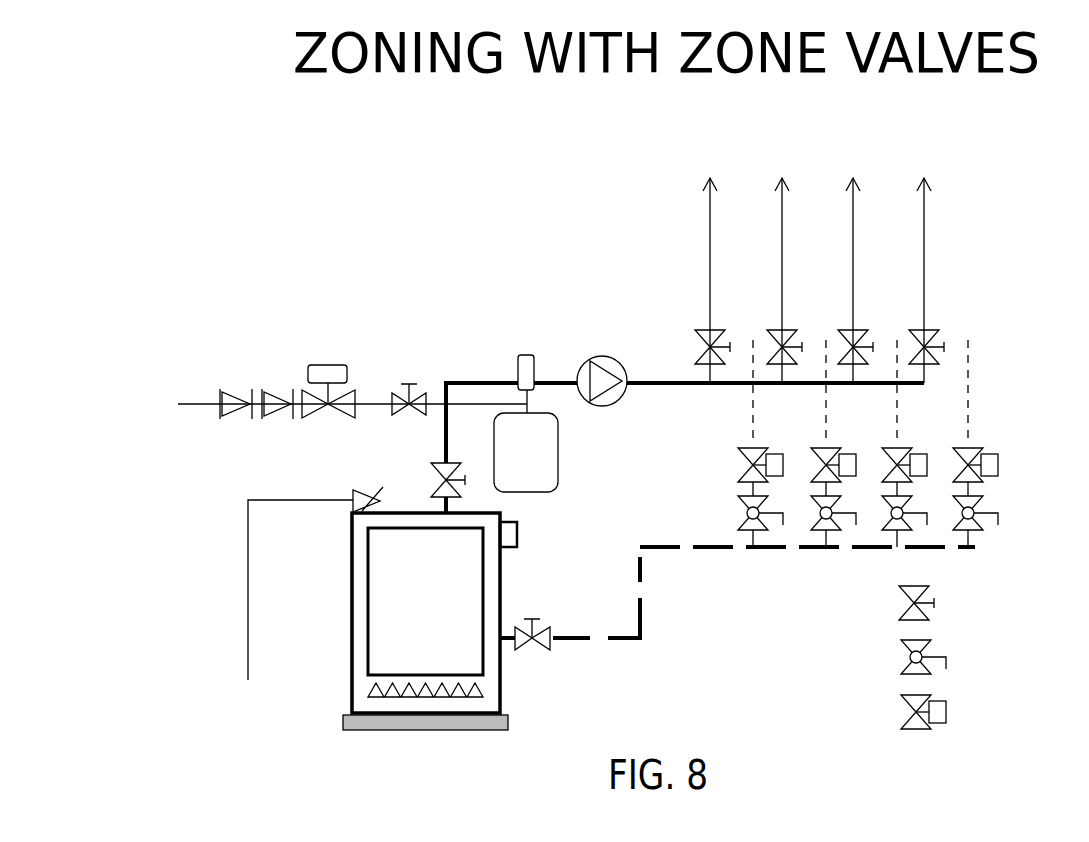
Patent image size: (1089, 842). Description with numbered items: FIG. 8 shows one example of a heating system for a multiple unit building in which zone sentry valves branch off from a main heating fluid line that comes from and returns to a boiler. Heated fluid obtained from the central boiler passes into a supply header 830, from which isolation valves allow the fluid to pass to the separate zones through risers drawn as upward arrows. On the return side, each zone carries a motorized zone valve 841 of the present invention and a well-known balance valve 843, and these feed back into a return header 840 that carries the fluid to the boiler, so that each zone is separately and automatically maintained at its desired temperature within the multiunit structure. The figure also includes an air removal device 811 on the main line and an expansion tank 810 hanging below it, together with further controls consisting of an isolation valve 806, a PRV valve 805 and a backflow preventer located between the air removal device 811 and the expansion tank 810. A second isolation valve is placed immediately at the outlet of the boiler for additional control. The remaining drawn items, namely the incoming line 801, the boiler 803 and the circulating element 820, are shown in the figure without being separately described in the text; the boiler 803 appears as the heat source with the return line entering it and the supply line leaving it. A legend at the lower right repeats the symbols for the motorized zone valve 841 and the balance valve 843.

The cold water supply line with check valves 801 is at (243, 421).
The boiler 803 is at (399, 608).
The PRV valve 805 is at (331, 364).
The isolation valve 806 is at (409, 381).
The expansion tank 810 is at (560, 442).
The air removal device 811 is at (536, 358).
The circulator pump 820 is at (621, 362).
The supply header 830 is at (927, 387).
The return header 840 is at (637, 547).
The motorized zone valve 841 is at (957, 447).
The balance valve 843 is at (953, 525).